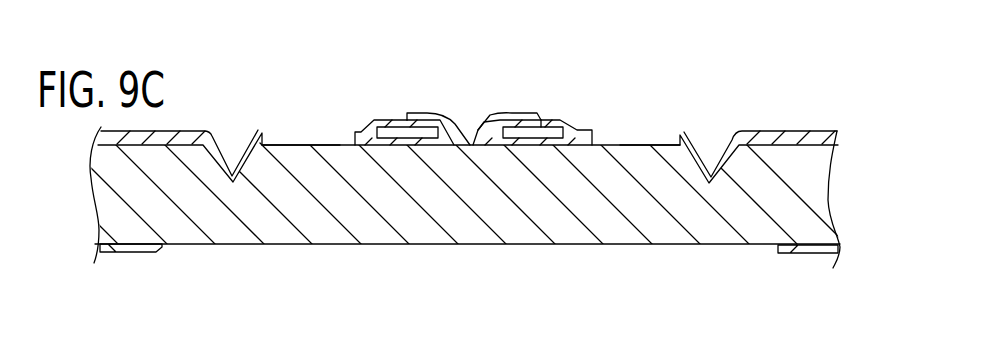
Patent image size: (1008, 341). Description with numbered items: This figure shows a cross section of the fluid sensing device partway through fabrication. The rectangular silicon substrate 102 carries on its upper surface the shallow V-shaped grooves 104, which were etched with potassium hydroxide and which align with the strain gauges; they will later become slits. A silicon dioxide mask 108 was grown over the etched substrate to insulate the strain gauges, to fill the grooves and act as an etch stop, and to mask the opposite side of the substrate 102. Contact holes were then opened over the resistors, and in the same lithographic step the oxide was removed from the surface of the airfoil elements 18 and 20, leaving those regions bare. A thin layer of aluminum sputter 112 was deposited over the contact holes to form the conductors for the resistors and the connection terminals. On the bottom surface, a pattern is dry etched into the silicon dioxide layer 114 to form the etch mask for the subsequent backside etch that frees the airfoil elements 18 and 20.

The airfoil element 18 is at (299, 145).
The airfoil element 20 is at (670, 145).
The silicon substrate 102 is at (829, 196).
The V-shaped groove 104 is at (392, 112).
The silicon dioxide mask 108 is at (222, 134).
The aluminum sputter layer 112 is at (510, 114).
The silicon dioxide layer 114 is at (130, 253).